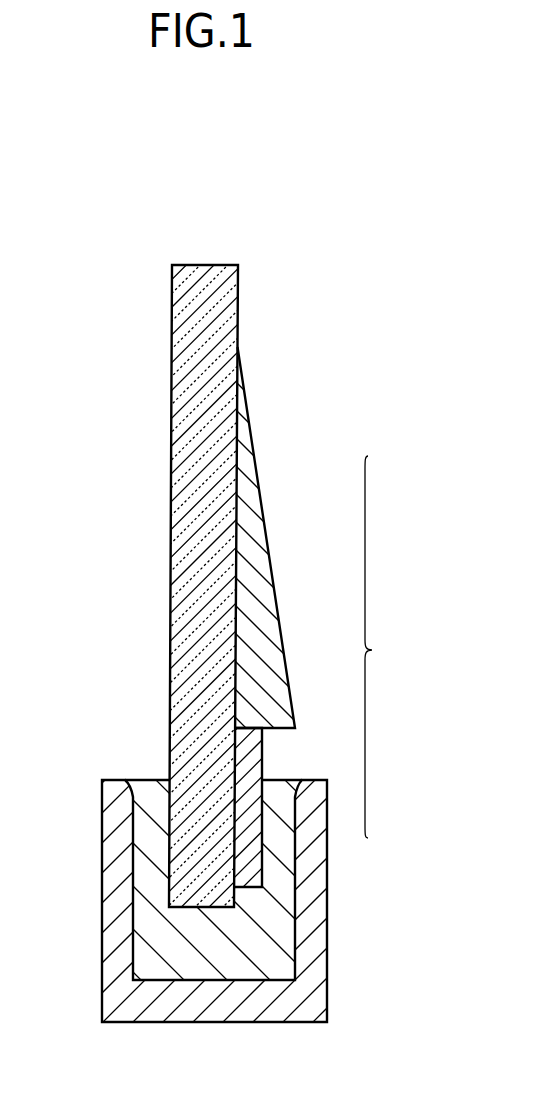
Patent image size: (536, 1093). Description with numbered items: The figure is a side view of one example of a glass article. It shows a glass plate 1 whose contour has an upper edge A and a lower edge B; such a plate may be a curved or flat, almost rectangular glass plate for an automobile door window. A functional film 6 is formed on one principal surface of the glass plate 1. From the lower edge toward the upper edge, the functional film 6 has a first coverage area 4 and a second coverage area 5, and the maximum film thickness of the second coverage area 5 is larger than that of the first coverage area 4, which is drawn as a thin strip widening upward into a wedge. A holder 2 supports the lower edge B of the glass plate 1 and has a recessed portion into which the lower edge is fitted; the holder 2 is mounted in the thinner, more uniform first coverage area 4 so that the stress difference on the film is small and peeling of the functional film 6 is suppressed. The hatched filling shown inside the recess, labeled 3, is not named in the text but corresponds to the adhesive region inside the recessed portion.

The glass plate 1 is at (183, 470).
The holder 2 is at (216, 1022).
The filler material in container 3 is at (270, 930).
The first coverage area 4 is at (255, 827).
The second coverage area 5 is at (255, 472).
The functional film 6 is at (378, 647).
The upper edge A is at (204, 265).
The lower edge B is at (213, 908).